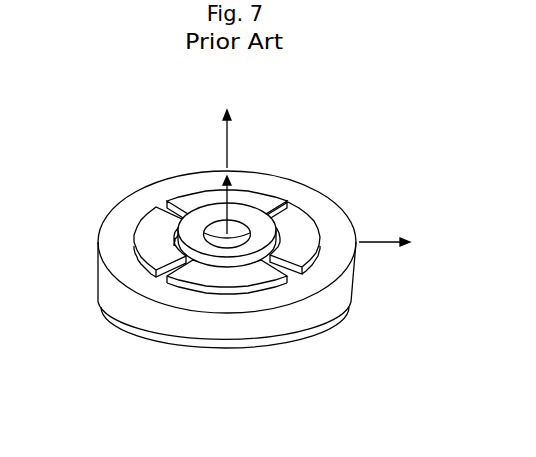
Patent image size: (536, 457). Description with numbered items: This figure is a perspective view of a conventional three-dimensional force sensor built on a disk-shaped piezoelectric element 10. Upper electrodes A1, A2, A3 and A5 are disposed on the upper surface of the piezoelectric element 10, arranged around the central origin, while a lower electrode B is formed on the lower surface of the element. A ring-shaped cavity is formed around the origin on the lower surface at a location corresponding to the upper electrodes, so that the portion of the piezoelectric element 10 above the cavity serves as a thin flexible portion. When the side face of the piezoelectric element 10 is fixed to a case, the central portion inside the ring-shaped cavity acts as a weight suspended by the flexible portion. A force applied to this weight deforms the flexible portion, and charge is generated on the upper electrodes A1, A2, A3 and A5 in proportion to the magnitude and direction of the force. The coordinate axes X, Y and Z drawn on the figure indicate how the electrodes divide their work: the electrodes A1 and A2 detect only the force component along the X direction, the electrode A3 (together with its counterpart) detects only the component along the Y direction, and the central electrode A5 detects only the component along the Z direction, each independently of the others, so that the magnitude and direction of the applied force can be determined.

The disk-shaped piezoelectric element 10 is at (113, 294).
The lower electrode B is at (307, 335).
The upper electrode A1 is at (153, 233).
The upper electrode A2 is at (297, 228).
The upper electrode A3 is at (203, 284).
The upper electrode A5 is at (248, 218).
The Z direction Z is at (222, 196).
The X direction X is at (391, 242).
The Y direction Y is at (228, 160).